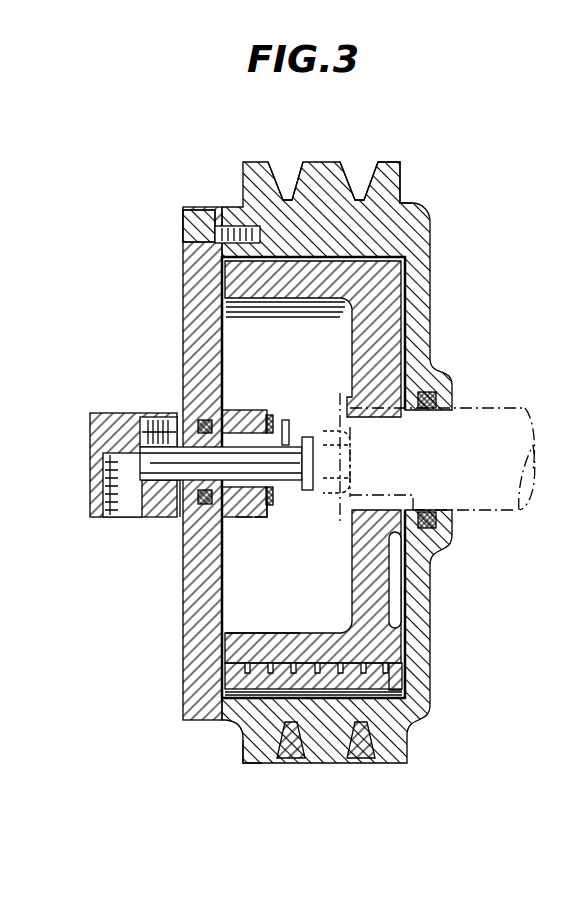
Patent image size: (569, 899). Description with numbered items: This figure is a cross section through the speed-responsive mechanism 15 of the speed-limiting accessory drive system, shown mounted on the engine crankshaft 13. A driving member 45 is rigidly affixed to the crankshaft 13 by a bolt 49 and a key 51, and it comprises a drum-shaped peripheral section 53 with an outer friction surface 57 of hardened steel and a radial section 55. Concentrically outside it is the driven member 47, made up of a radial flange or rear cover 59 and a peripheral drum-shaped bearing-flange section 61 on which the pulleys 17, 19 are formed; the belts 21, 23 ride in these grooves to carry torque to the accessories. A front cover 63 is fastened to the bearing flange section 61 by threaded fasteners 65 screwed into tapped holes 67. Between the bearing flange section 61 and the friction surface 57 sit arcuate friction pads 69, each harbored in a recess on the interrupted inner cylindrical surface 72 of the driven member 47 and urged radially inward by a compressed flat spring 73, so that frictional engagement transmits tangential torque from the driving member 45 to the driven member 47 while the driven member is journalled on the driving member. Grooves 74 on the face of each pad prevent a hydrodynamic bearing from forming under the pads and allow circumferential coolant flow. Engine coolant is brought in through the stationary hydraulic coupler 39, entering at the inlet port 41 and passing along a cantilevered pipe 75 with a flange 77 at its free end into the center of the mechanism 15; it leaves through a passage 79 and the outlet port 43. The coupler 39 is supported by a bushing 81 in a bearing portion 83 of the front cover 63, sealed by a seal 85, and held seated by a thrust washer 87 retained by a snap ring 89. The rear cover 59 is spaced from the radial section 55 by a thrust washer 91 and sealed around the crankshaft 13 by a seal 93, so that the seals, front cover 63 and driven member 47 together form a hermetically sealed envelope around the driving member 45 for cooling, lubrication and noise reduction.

The crankshaft 13 is at (500, 510).
The speed-responsive mechanism 15 is at (160, 163).
The pulley 17 is at (283, 195).
The pulley 19 is at (360, 195).
The belt 21 is at (300, 762).
The belt 23 is at (372, 762).
The hydraulic coupler 39 is at (95, 451).
The inlet port 41 is at (104, 466).
The outlet port 43 is at (152, 418).
The driving member 45 is at (380, 292).
The driven member 47 is at (241, 766).
The bolt 49 is at (330, 500).
The key 51 is at (412, 492).
The drum-shaped peripheral section 53 is at (243, 650).
The radial section 55 is at (410, 597).
The friction surface 57 is at (250, 672).
The rear cover 59 is at (418, 305).
The bearing-flange section 61 is at (405, 207).
The front cover 63 is at (190, 318).
The threaded fasteners 65 is at (190, 228).
The tapped holes 67 is at (233, 226).
The friction pads 69 is at (235, 688).
The interrupted inner cylindrical surface 72 is at (388, 248).
The compressed flat spring 73 is at (250, 697).
The grooves 74 is at (400, 686).
The cantilevered pipe 75 is at (142, 445).
The flange 77 is at (307, 440).
The passage 79 is at (160, 506).
The bushing 81 is at (244, 520).
The bearing portion 83 is at (263, 520).
The seal 85 is at (200, 418).
The thrust washer 87 is at (268, 416).
The snap ring 89 is at (283, 420).
The thrust washer 91 is at (408, 388).
The seal 93 is at (452, 540).